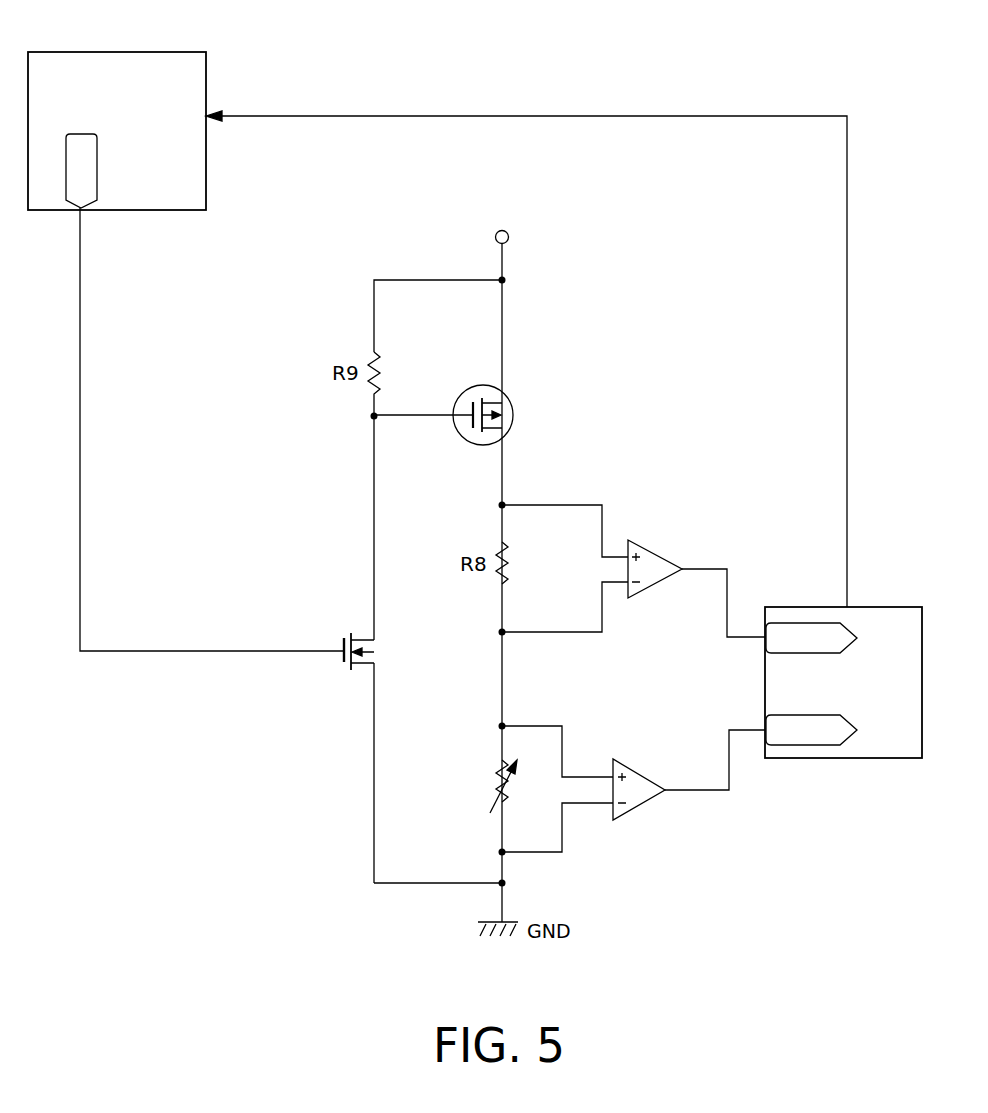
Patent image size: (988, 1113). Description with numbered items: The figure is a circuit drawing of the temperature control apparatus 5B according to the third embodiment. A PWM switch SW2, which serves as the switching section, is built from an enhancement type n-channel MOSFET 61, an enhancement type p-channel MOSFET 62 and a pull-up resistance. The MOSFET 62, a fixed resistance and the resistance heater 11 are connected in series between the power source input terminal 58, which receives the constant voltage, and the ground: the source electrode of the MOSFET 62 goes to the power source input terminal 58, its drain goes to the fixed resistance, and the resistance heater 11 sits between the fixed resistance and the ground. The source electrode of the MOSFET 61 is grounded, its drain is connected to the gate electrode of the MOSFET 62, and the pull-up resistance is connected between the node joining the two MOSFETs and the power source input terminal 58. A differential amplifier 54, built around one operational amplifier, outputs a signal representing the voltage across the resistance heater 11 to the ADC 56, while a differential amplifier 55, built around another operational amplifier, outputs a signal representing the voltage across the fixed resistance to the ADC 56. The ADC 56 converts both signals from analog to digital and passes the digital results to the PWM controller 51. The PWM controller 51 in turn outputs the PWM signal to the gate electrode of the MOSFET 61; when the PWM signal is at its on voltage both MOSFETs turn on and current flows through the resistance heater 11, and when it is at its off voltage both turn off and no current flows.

The temperature control apparatus 5B is at (776, 88).
The PWM controller 51 is at (122, 51).
The power source input terminal 58 is at (503, 230).
The enhancement type p-channel MOSFET 62 is at (514, 402).
The enhancement type n-channel MOSFET 61 is at (366, 637).
The PWM switch SW2 is at (338, 513).
The differential amplifier 55 is at (640, 540).
The differential amplifier 54 is at (628, 760).
The resistance heater 11 is at (486, 786).
The analog to digital converter (ADC) 56 is at (845, 758).